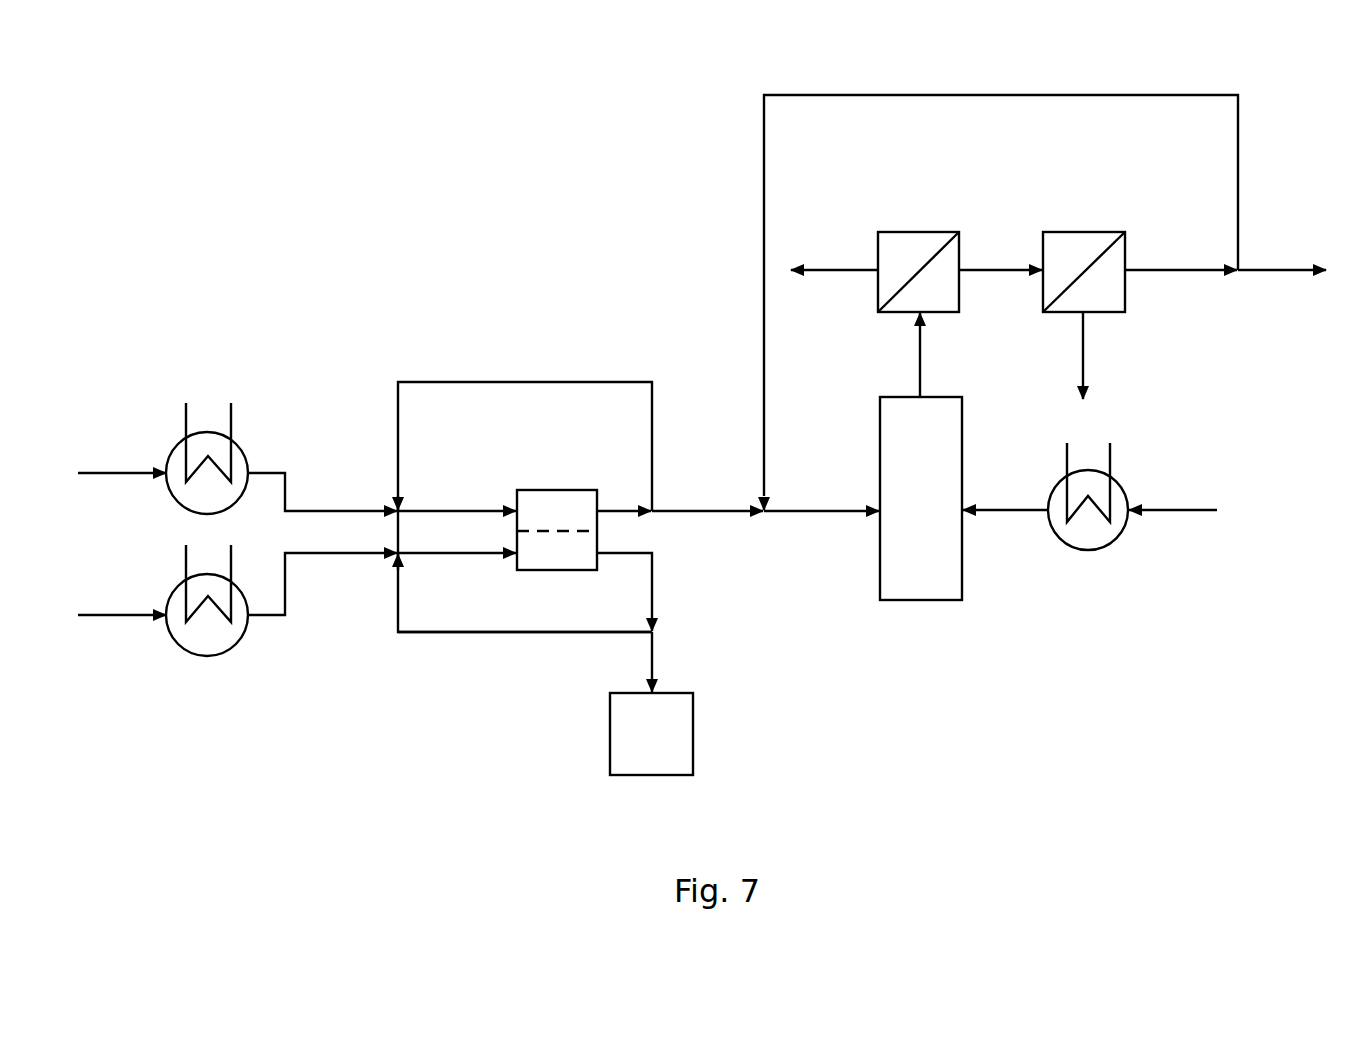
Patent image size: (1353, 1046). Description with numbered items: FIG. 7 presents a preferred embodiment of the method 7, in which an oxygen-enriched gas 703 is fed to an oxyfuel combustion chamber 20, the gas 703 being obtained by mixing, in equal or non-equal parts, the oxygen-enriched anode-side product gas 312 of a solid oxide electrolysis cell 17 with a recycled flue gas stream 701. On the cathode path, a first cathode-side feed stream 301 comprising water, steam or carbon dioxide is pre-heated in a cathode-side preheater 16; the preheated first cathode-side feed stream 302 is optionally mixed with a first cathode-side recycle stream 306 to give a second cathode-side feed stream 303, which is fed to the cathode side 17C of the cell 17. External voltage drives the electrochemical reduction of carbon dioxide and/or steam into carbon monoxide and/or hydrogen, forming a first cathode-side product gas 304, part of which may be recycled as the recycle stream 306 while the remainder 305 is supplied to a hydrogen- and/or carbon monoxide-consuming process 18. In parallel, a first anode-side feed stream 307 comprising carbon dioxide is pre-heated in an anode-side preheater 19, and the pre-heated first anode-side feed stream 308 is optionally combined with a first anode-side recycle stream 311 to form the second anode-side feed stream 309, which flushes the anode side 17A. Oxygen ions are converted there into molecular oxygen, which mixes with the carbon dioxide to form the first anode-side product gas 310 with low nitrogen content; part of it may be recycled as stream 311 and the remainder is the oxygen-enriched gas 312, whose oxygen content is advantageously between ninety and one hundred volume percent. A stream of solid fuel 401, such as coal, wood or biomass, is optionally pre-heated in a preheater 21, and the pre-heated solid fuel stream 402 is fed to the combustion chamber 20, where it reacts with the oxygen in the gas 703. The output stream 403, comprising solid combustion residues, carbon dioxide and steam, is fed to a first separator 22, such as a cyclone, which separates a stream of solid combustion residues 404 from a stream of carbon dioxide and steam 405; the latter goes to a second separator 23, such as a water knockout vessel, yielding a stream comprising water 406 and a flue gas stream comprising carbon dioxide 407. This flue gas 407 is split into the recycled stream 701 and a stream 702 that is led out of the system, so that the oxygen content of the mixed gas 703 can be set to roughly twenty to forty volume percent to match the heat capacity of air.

The method 7 is at (262, 281).
The cathode-side preheater 16 is at (184, 582).
The solid oxide electrolysis cell 17 is at (516, 489).
The anode side 17A is at (563, 507).
The cathode side 17C is at (570, 556).
The hydrogen- and/or carbon monoxide-consuming process 18 is at (609, 695).
The anode-side preheater 19 is at (184, 440).
The oxyfuel combustion chamber 20 is at (879, 396).
The preheater 21 is at (1113, 483).
The first separator 22 is at (877, 231).
The second separator 23 is at (1042, 231).
The first cathode-side feed stream 301 is at (127, 614).
The preheated first cathode-side feed stream 302 is at (362, 555).
The second cathode-side feed stream 303 is at (472, 556).
The first cathode-side product gas 304 is at (654, 602).
The remainder of the first cathode-side product gas 305 is at (654, 662).
The first cathode-side recycle stream 306 is at (507, 634).
The first anode-side feed stream 307 is at (127, 472).
The pre-heated first anode-side feed stream 308 is at (325, 508).
The second anode-side feed stream 309 is at (468, 508).
The first anode-side product gas 310 is at (633, 508).
The first anode-side recycle stream 311 is at (542, 381).
The oxygen-enriched gas 312 is at (722, 508).
The stream of solid fuel 401 is at (1172, 508).
The pre-heated solid fuel stream 402 is at (1007, 508).
The output stream 403 is at (922, 362).
The stream comprising solid combustion residues 404 is at (847, 268).
The stream comprising carbon dioxide and steam 405 is at (1007, 268).
The stream comprising H2O 406 is at (1086, 357).
The stream comprising carbon dioxide 407 is at (1160, 268).
The flue gas stream 701 is at (762, 348).
The stream led out of the system 702 is at (1277, 268).
The oxygen-enriched gas 703 is at (828, 508).